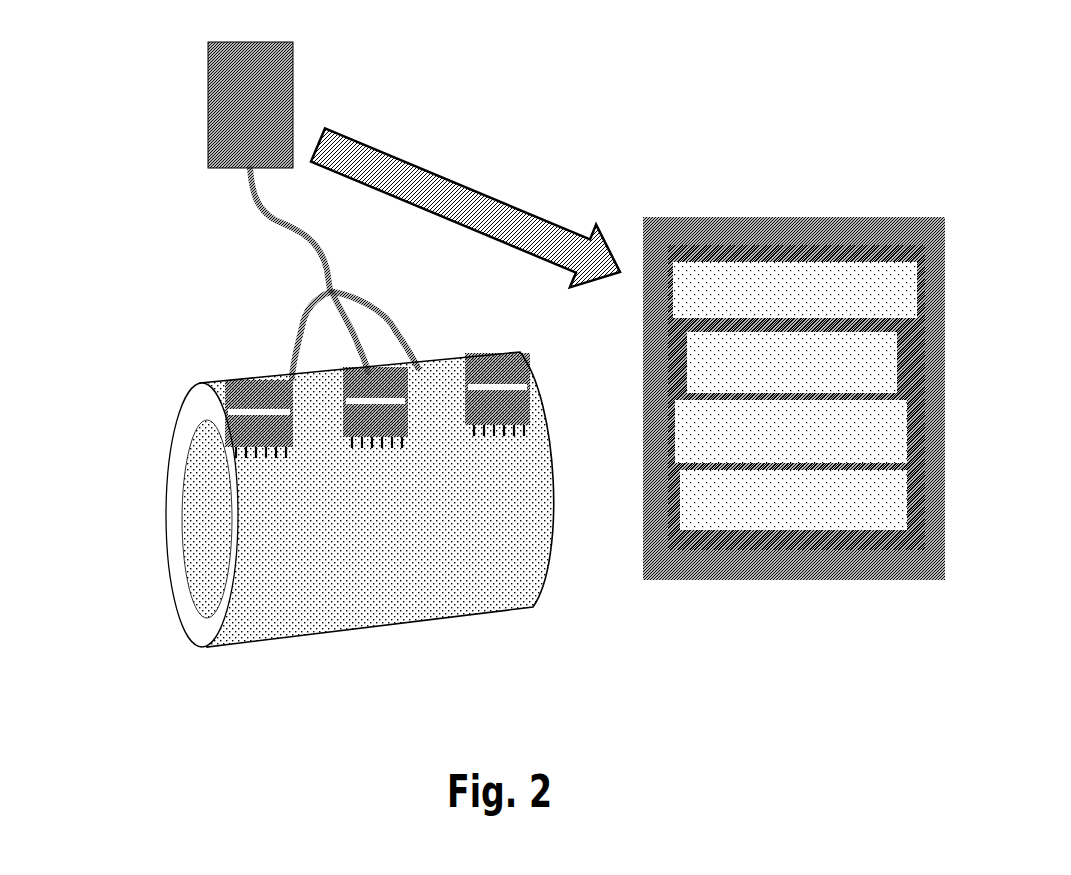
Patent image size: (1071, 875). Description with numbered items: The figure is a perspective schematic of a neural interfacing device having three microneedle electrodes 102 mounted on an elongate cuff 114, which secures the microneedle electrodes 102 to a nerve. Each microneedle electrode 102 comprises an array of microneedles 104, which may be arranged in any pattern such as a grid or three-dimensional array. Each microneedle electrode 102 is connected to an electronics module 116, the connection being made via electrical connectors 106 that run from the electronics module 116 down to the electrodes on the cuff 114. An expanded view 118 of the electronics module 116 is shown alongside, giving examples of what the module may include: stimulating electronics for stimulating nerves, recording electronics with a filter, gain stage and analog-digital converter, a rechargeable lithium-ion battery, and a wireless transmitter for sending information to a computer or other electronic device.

The microneedle electrode 102 is at (242, 385).
The microneedle 104 is at (247, 457).
The electrical connector 106 is at (330, 281).
The elongate cuff 114 is at (520, 610).
The electronics module 116 is at (293, 73).
The expanded view of the electronics module 118 is at (750, 217).